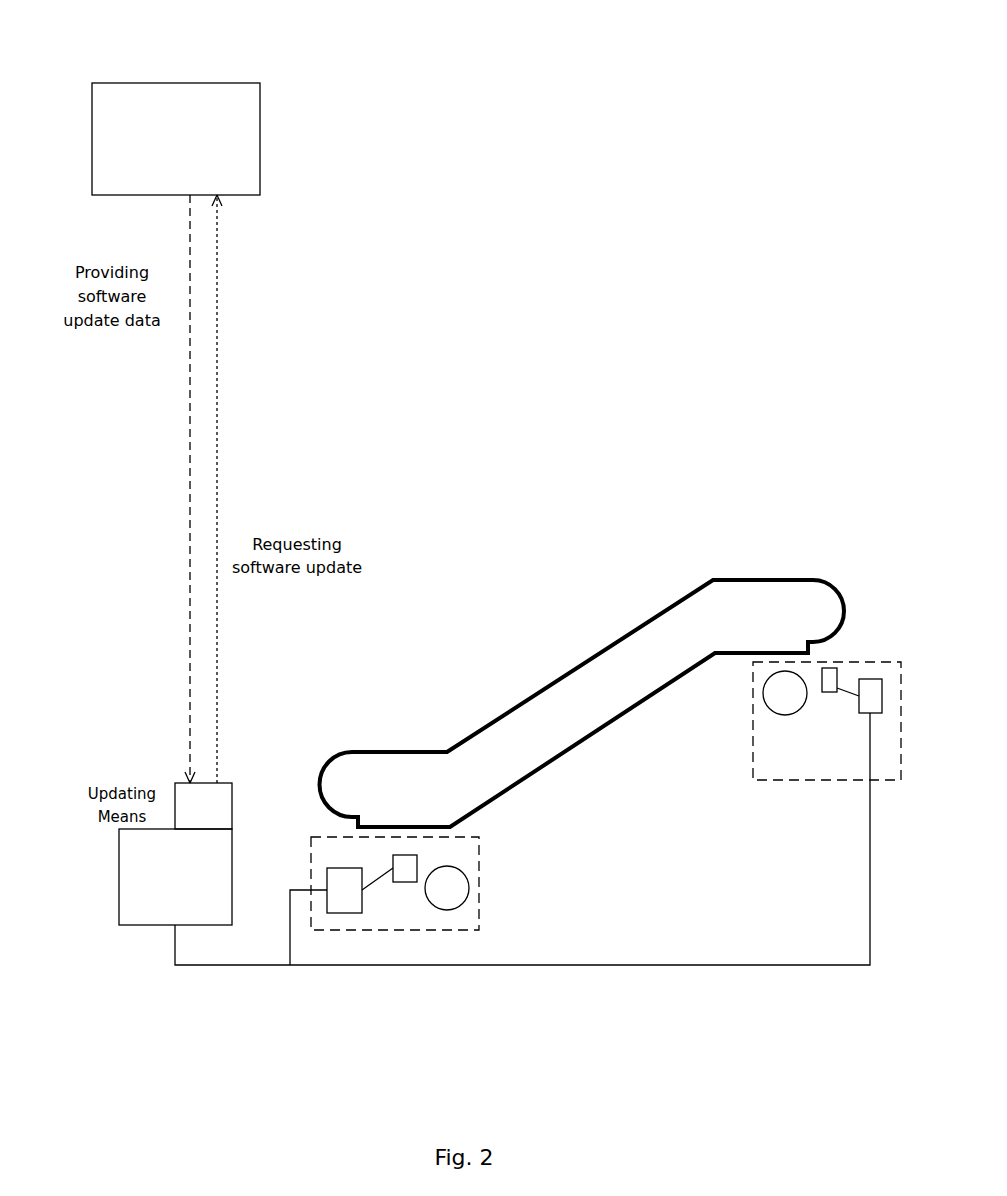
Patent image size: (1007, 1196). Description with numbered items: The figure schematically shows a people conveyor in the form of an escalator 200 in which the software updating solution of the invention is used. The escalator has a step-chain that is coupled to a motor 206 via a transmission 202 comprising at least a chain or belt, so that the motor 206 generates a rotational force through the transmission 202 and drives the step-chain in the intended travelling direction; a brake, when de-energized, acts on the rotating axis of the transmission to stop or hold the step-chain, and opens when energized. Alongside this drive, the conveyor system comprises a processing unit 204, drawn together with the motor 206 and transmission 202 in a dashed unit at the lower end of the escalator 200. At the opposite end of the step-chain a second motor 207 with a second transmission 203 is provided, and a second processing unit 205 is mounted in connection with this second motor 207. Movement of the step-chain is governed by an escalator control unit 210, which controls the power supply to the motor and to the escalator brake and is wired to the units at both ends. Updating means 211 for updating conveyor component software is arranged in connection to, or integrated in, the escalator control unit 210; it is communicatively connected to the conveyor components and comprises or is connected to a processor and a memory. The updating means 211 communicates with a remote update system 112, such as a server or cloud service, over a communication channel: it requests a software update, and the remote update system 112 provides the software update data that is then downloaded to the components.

The remote update system 112 is at (130, 83).
The escalator 200 is at (462, 518).
The transmission 202 is at (417, 858).
The second transmission 203 is at (829, 667).
The processing unit 204 is at (340, 913).
The second processing unit 205 is at (868, 678).
The motor 206 is at (470, 895).
The second motor 207 is at (763, 695).
The escalator control unit 210 is at (175, 877).
The updating means 211 is at (203, 806).